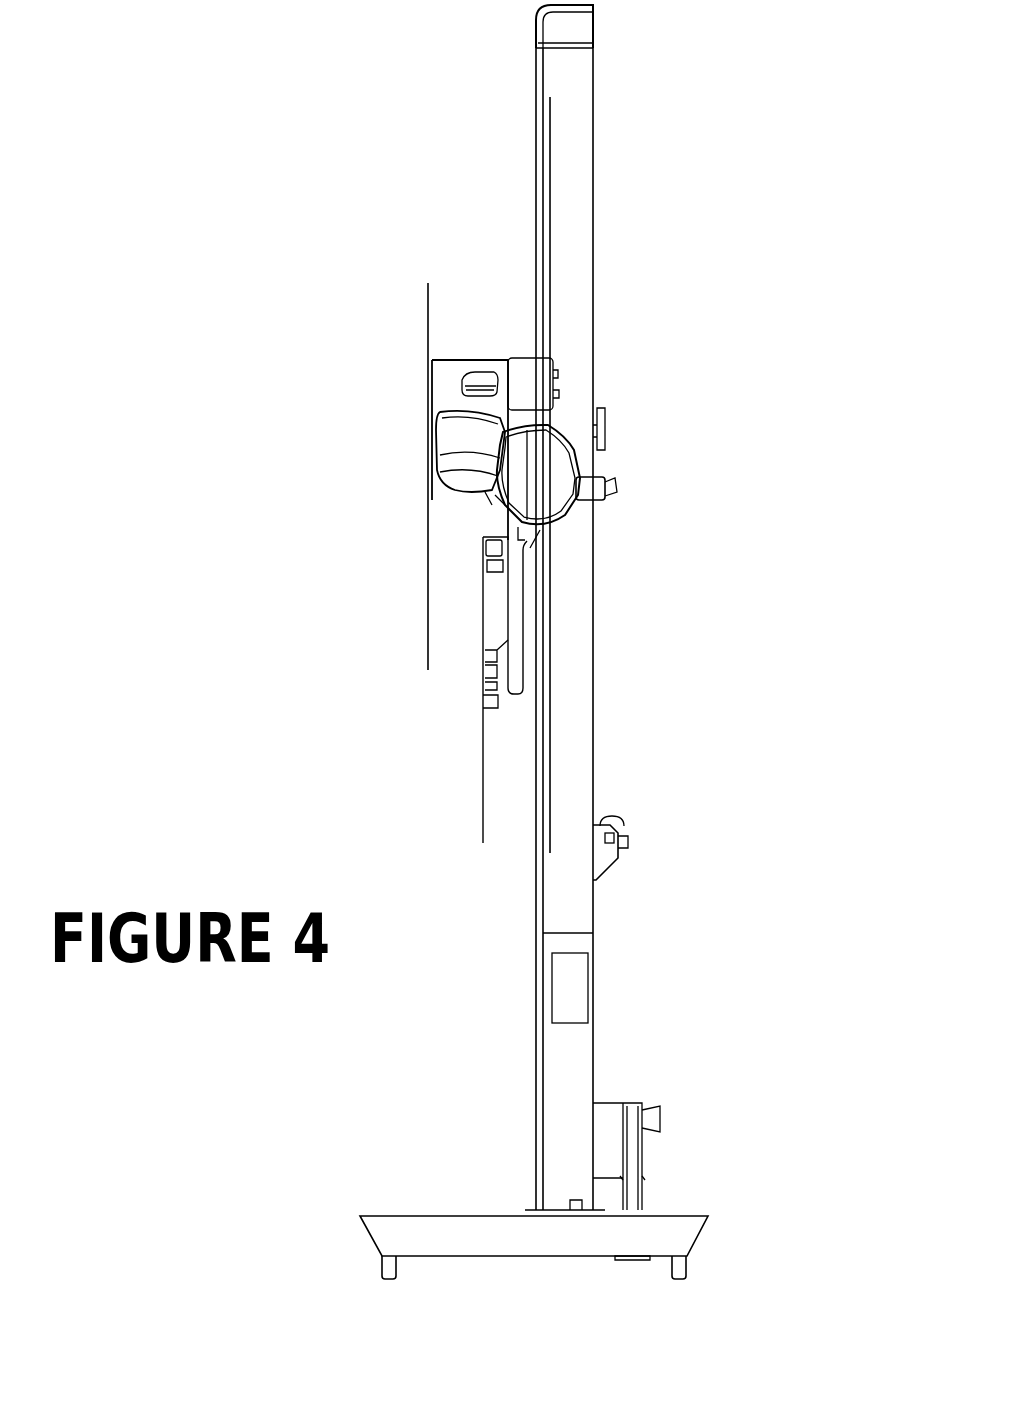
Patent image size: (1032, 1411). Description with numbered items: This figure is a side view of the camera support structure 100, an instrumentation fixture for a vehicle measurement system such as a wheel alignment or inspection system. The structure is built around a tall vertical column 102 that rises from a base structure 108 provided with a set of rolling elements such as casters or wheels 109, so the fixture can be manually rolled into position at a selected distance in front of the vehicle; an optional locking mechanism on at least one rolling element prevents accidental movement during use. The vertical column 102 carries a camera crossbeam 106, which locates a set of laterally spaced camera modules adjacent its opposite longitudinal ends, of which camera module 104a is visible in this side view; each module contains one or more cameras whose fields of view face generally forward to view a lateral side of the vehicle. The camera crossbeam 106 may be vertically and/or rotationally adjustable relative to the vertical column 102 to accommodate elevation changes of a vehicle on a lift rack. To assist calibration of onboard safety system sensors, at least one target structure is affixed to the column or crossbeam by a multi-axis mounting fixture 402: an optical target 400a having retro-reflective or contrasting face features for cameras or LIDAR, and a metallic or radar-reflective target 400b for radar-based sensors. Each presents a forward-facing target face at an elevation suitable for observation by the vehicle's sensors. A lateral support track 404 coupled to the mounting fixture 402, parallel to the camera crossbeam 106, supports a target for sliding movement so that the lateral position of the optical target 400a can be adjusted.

The support structure 100 is at (657, 226).
The vertical column 102 is at (525, 197).
The camera module 104a is at (560, 467).
The camera crossbeam 106 is at (455, 437).
The base structure 108 is at (448, 1202).
The casters or wheels 109 is at (375, 1270).
The optical target 400a is at (465, 762).
The radar-reflective target 400b is at (420, 535).
The multi-axis mounting fixture 402 is at (487, 365).
The lateral support track 404 is at (507, 665).